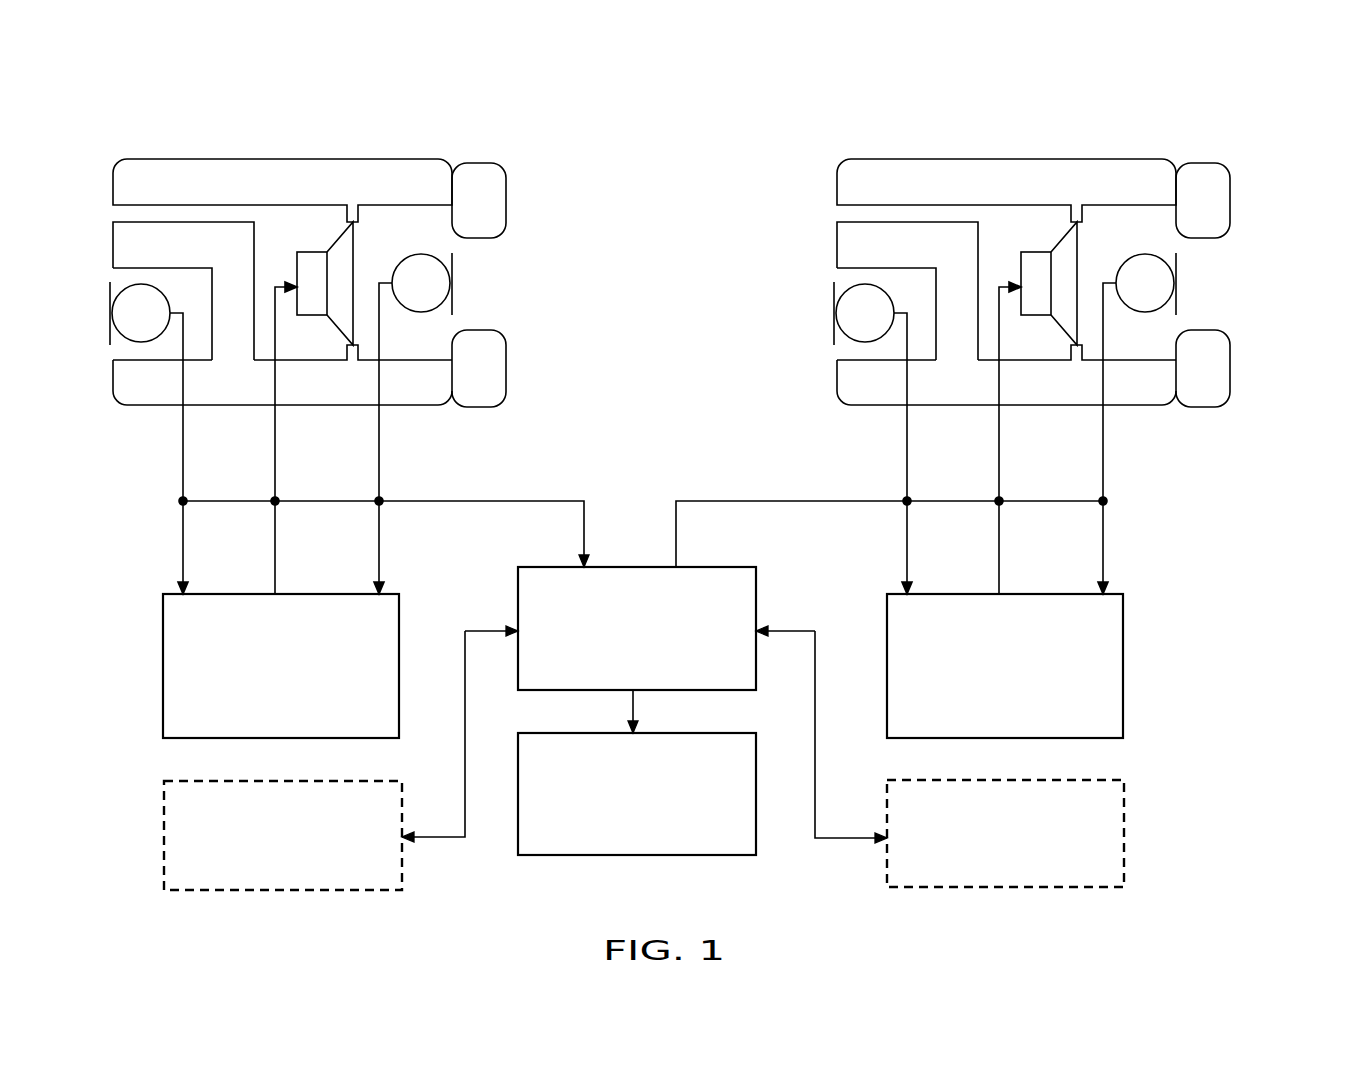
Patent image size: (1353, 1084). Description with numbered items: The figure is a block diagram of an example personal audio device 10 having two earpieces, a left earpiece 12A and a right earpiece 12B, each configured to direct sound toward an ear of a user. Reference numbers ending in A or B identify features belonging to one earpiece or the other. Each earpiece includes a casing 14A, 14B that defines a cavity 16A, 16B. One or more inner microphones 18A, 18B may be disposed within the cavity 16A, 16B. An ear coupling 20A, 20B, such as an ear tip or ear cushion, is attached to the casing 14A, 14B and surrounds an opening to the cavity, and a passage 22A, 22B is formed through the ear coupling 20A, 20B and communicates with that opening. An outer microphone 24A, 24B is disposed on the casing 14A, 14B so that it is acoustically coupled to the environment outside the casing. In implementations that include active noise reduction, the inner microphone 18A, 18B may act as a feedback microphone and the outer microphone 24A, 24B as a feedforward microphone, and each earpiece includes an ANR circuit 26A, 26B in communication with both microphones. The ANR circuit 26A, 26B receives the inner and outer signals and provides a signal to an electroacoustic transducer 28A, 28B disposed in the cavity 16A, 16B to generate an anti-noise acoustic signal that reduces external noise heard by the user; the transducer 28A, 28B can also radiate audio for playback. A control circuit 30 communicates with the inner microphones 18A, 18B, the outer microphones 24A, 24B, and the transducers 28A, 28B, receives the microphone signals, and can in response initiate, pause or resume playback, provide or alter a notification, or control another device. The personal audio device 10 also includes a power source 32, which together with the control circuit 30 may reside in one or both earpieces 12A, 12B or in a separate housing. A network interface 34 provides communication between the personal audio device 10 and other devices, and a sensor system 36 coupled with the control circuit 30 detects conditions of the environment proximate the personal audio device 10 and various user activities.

The personal audio device 10 is at (694, 145).
The left earpiece 12A is at (148, 132).
The right earpiece 12B is at (1055, 325).
The casing 14A is at (264, 196).
The casing 14B is at (1006, 282).
The cavity 16A is at (435, 333).
The cavity 16B is at (1071, 299).
The inner microphone 18A is at (400, 297).
The inner microphone 18B is at (1136, 424).
The ear coupling 20A is at (456, 207).
The ear coupling 20B is at (1203, 285).
The passage 22A is at (500, 265).
The passage 22B is at (1241, 244).
The outer microphone 24A is at (118, 327).
The outer microphone 24B is at (873, 438).
The ANR circuit 26A is at (258, 689).
The ANR circuit 26B is at (982, 689).
The electroacoustic transducer 28A is at (304, 300).
The electroacoustic transducer 28B is at (1036, 408).
The control circuit 30 is at (618, 676).
The power source 32 is at (618, 837).
The network interface 34 is at (268, 876).
The sensor system 36 is at (990, 876).